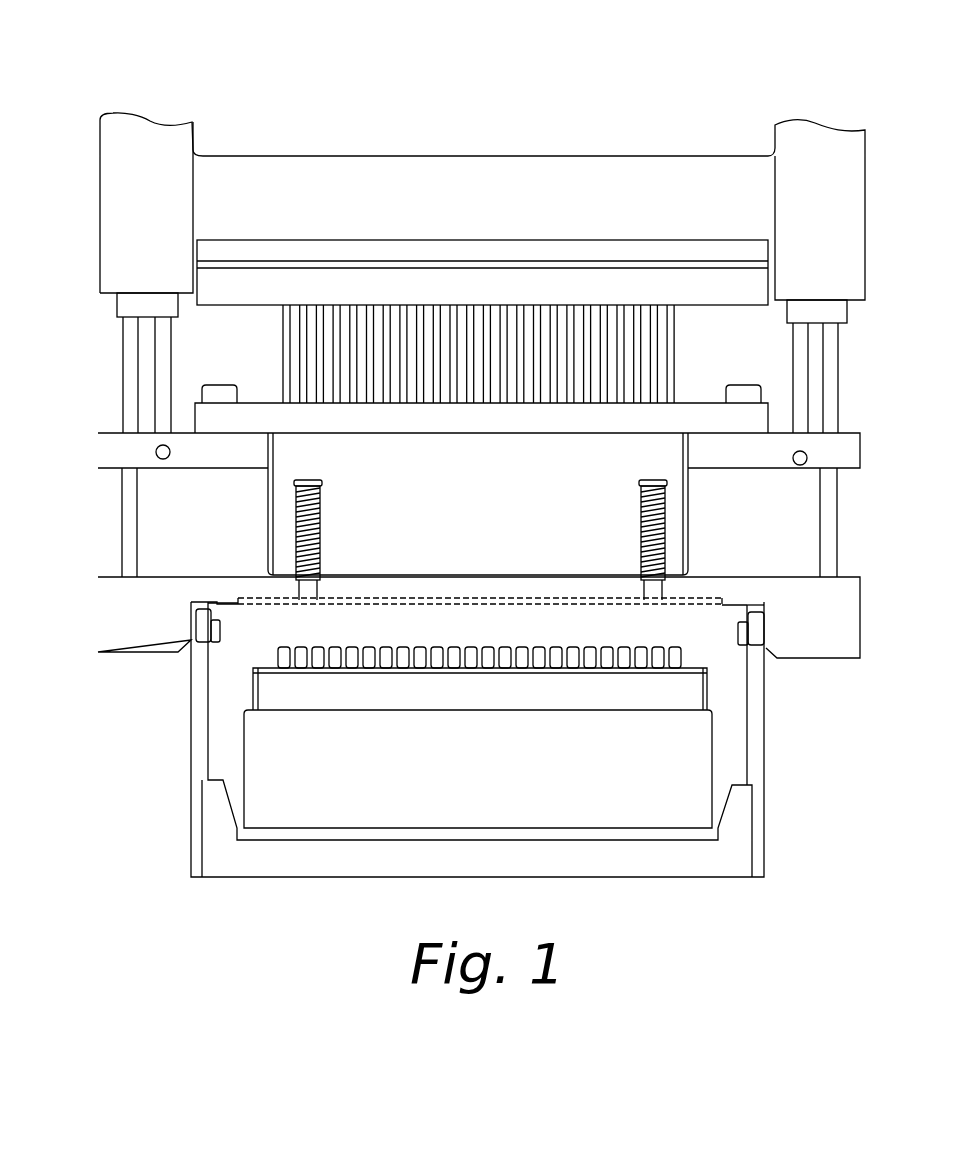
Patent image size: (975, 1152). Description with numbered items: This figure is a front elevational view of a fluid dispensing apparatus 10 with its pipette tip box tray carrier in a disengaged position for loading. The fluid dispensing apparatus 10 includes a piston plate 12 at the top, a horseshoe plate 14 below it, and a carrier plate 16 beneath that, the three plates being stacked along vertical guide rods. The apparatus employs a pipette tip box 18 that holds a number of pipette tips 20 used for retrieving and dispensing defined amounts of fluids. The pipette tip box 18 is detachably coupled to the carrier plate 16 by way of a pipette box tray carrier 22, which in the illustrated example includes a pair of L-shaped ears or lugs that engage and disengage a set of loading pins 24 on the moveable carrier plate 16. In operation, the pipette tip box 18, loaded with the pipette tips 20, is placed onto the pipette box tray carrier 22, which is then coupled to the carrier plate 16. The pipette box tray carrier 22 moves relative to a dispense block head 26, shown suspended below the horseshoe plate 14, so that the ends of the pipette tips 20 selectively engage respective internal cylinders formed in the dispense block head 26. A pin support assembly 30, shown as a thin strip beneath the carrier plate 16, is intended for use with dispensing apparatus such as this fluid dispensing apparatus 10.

The fluid dispensing apparatus 10 is at (587, 86).
The piston plate 12 is at (100, 200).
The horseshoe plate 14 is at (98, 450).
The carrier plate 16 is at (98, 618).
The pipette tip box 18 is at (713, 770).
The pipette tips 20 is at (683, 658).
The pipette box tray carrier 22 is at (765, 762).
The loading pins 24 is at (740, 648).
The dispense block head 26 is at (270, 515).
The pin support assembly 30 is at (258, 604).